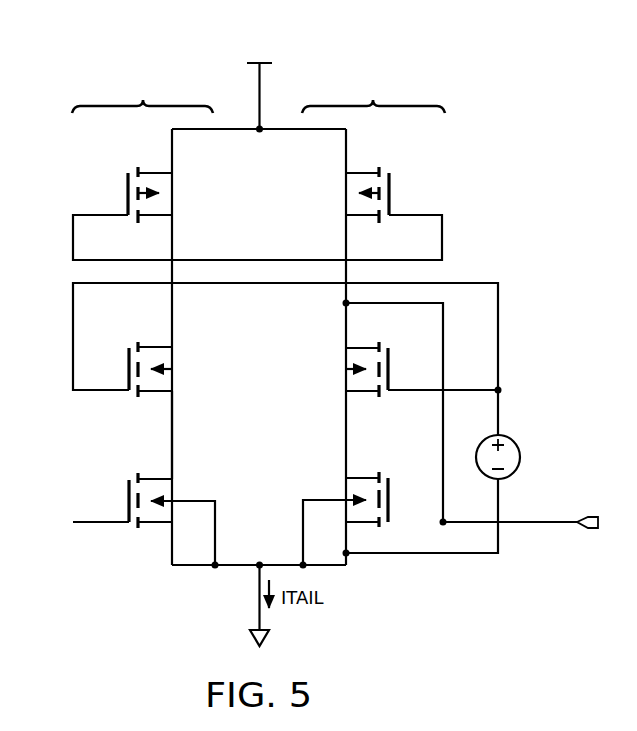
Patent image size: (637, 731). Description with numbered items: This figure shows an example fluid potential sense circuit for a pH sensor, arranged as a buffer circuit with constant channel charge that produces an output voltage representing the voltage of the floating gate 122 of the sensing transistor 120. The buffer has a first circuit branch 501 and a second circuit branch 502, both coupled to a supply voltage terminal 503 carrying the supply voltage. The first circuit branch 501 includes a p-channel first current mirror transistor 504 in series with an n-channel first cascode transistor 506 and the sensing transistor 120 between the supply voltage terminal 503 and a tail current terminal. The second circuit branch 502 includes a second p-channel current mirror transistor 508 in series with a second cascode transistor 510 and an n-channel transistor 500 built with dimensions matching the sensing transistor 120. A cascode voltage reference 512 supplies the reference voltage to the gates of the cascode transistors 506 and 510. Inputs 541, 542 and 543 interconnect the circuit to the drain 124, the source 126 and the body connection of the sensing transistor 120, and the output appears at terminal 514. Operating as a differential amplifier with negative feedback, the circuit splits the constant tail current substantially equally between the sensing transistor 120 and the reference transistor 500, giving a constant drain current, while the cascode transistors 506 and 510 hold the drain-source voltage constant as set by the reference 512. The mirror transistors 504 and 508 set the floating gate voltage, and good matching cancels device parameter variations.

The sensing transistor 120 is at (172, 544).
The floating gate 122 is at (90, 521).
The drain 124 is at (170, 466).
The source 126 is at (169, 533).
The n-channel transistor 500 is at (313, 474).
The first circuit branch 501 is at (142, 92).
The second circuit branch 502 is at (373, 91).
The supply voltage terminal 503 is at (260, 90).
The first current mirror transistor 504 is at (82, 168).
The first cascode transistor 506 is at (203, 354).
The second p-channel current mirror transistor 508 is at (433, 168).
The second cascode transistor 510 is at (315, 372).
The cascode voltage reference 512 is at (518, 436).
The output terminal 514 is at (535, 523).
The input 541 is at (173, 430).
The input 542 is at (193, 567).
The input 543 is at (217, 522).